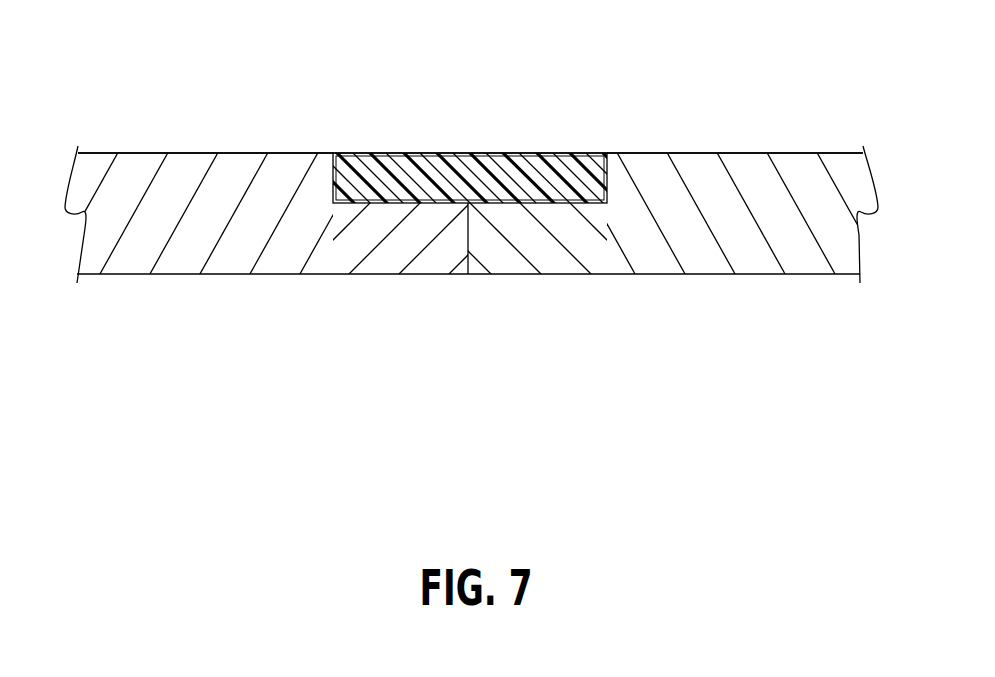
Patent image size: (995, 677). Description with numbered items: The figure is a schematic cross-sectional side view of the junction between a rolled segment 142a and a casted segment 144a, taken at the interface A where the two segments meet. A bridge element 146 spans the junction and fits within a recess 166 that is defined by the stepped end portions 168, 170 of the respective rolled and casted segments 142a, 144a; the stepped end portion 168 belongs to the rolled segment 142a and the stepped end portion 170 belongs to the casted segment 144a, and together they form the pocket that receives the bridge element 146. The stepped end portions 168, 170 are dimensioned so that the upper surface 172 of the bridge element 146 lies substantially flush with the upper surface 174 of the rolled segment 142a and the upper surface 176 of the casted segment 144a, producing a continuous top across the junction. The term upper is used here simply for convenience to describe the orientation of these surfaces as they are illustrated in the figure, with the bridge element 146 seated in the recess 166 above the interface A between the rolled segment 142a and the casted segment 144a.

The rolled segment 142a is at (117, 277).
The casted segment 144a is at (827, 276).
The bridge element 146 is at (487, 160).
The recess 166 is at (338, 162).
The stepped end portion 168 is at (407, 256).
The stepped end portion 170 is at (547, 256).
The upper surface of the bridge element 172 is at (565, 152).
The upper surface of the rolled segment 174 is at (140, 152).
The upper surface of the casted segment 176 is at (763, 152).
The interface A is at (468, 281).